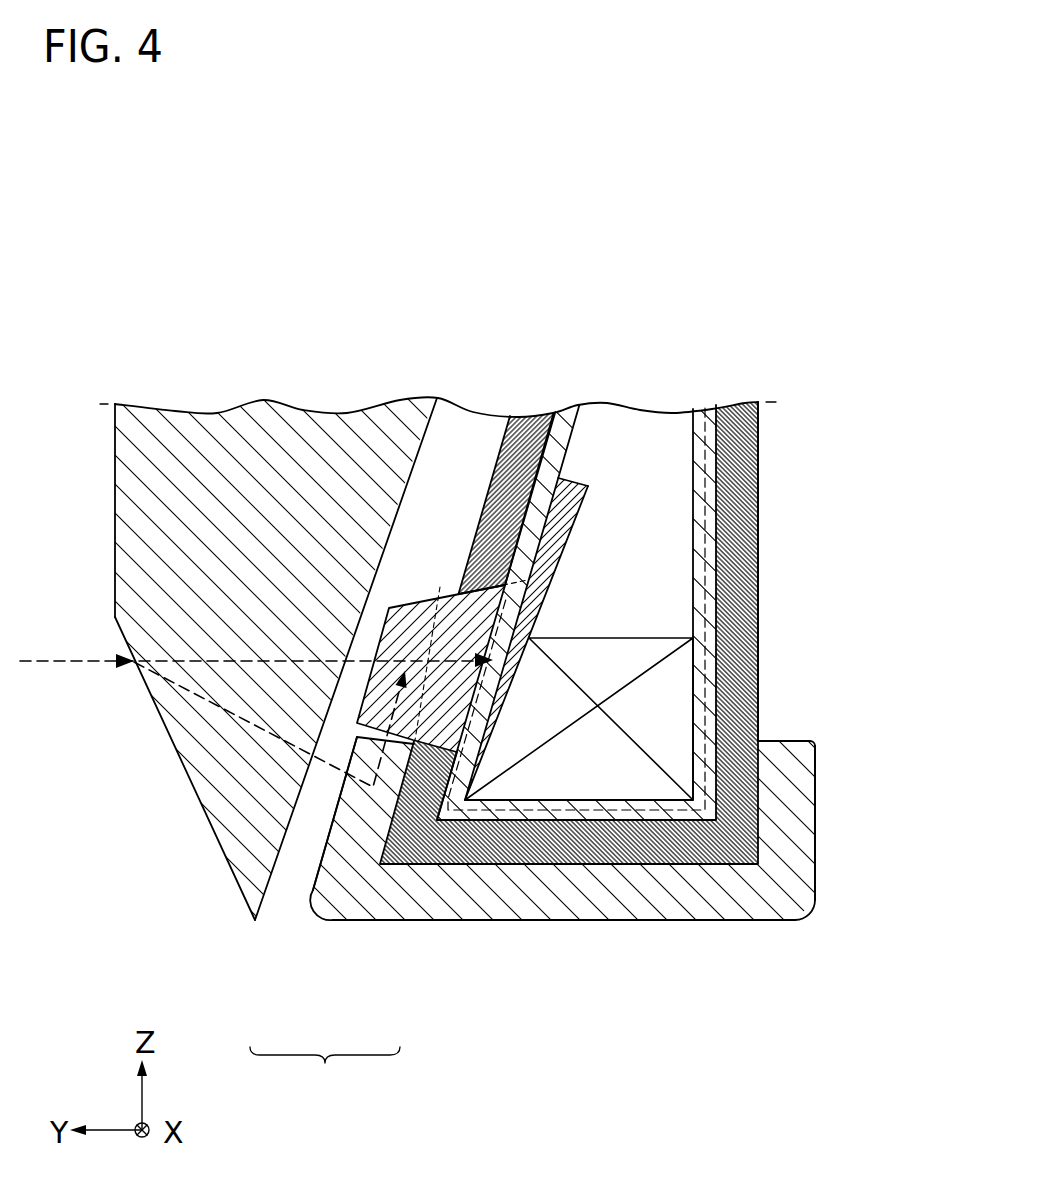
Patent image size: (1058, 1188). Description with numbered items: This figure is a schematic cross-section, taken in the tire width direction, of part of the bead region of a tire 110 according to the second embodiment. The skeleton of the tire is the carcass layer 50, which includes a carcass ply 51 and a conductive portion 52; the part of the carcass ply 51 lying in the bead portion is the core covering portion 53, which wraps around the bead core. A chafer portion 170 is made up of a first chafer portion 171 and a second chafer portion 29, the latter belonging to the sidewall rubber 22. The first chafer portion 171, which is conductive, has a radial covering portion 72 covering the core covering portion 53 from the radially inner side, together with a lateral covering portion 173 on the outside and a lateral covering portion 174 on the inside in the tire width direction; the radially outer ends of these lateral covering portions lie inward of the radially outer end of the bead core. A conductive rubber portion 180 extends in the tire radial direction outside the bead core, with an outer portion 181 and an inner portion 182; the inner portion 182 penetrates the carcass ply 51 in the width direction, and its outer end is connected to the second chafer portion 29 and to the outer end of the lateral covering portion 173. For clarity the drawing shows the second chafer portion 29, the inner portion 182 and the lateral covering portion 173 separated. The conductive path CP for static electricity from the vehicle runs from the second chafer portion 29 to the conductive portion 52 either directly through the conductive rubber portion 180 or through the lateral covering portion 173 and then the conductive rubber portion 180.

The sidewall rubber 22 is at (465, 594).
The second chafer portion 29 is at (262, 878).
The carcass layer 50 is at (485, 594).
The carcass ply 51 is at (738, 412).
The conductive portion 52 is at (710, 300).
The core covering portion 53 is at (756, 402).
The radial covering portion 72 is at (516, 594).
The tire 110 is at (476, 594).
The chafer portion 170 is at (325, 1071).
The first chafer portion 171 is at (391, 918).
The lateral covering portion 173 is at (362, 803).
The lateral covering portion 174 is at (803, 803).
The conductive rubber portion 180 is at (631, 583).
The outer portion 181 is at (562, 540).
The inner portion 182 is at (420, 618).
The conductive path CP is at (60, 668).